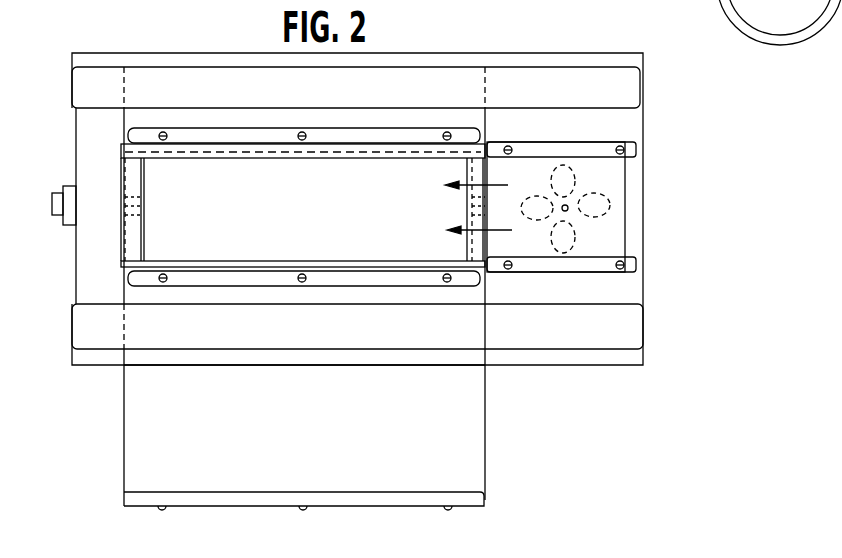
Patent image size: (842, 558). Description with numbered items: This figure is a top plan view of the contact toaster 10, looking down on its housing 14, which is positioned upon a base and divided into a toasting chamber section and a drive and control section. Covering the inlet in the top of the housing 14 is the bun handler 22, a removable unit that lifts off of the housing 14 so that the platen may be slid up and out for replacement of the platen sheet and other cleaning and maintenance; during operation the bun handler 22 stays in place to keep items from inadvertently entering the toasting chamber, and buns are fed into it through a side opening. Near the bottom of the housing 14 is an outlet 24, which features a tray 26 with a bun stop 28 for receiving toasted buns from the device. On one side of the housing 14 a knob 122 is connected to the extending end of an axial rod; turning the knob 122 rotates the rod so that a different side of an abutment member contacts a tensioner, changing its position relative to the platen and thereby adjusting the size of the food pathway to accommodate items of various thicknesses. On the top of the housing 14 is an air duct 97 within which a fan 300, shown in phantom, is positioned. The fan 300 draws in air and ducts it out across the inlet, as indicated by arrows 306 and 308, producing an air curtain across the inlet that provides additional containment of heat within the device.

The contact toaster 10 is at (715, 168).
The housing 14 is at (643, 287).
The bun handler 22 is at (457, 153).
The outlet 24 is at (150, 365).
The tray 26 is at (483, 418).
The bun stop 28 is at (468, 510).
The air duct 97 is at (582, 158).
The knob 122 is at (52, 206).
The fan 300 is at (603, 217).
The arrow 306 is at (498, 183).
The arrow 308 is at (505, 230).